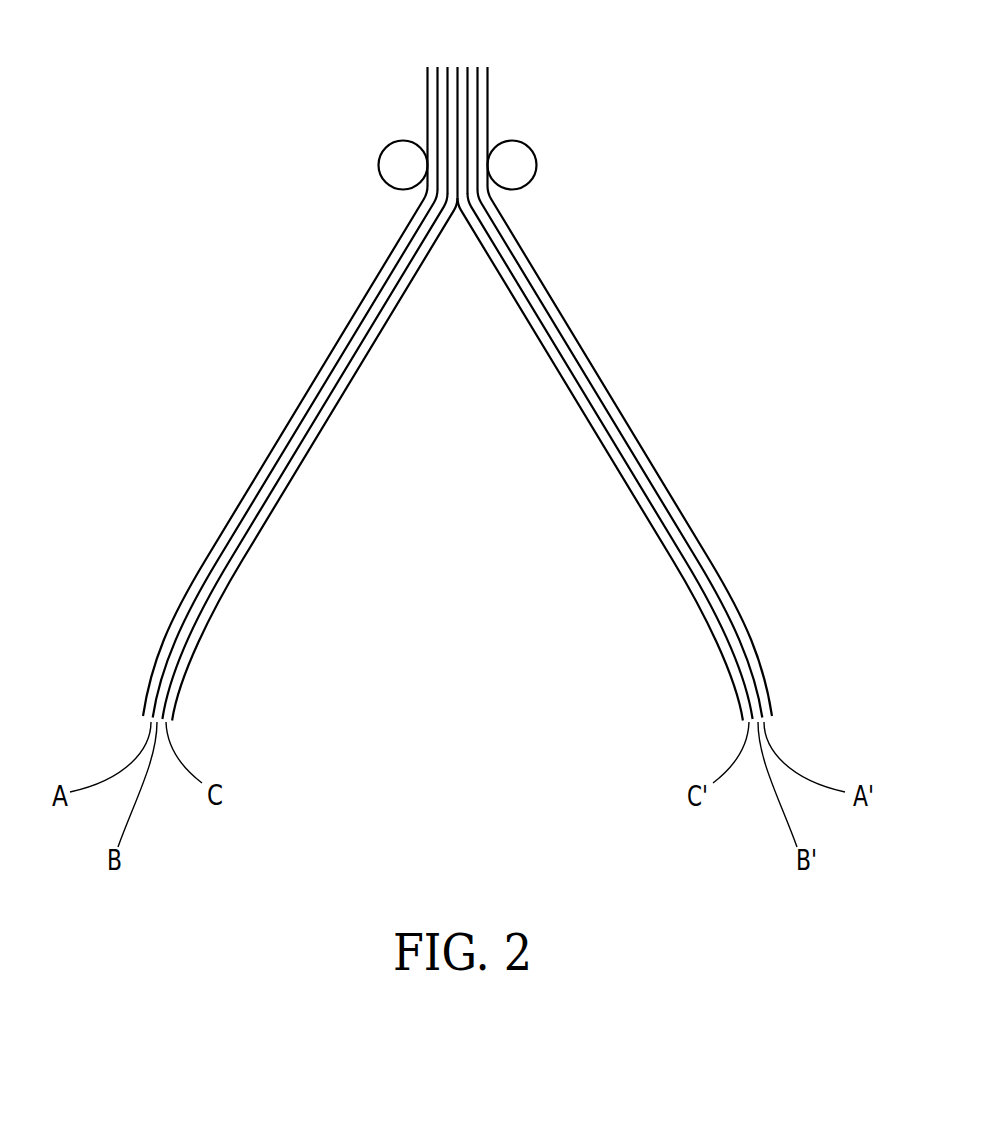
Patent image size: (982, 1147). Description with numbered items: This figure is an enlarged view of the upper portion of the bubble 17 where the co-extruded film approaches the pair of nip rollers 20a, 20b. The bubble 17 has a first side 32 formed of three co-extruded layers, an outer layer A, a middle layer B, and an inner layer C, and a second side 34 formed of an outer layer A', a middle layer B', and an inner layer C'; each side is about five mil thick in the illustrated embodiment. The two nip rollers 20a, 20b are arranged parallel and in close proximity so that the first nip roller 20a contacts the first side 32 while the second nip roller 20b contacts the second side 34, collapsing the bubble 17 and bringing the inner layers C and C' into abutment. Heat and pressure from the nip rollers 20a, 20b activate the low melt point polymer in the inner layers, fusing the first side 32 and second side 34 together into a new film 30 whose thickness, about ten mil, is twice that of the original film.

The bubble 17 is at (419, 368).
The first nip roller 20a is at (378, 163).
The second nip roller 20b is at (538, 163).
The new film 30 is at (488, 87).
The first side 32 is at (275, 445).
The second side 34 is at (640, 445).